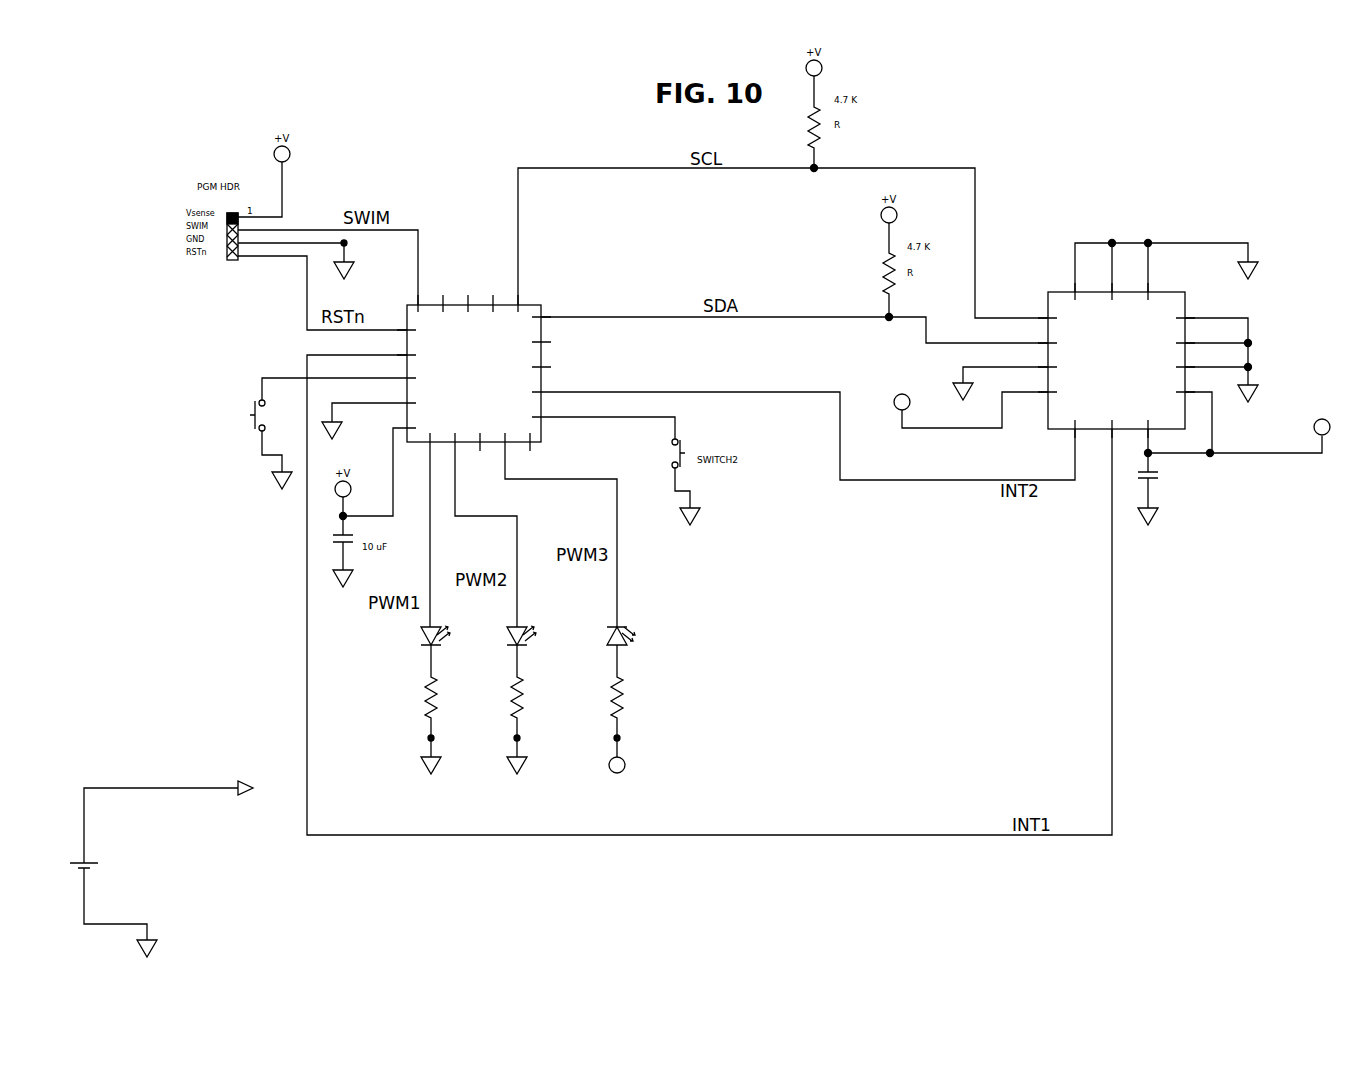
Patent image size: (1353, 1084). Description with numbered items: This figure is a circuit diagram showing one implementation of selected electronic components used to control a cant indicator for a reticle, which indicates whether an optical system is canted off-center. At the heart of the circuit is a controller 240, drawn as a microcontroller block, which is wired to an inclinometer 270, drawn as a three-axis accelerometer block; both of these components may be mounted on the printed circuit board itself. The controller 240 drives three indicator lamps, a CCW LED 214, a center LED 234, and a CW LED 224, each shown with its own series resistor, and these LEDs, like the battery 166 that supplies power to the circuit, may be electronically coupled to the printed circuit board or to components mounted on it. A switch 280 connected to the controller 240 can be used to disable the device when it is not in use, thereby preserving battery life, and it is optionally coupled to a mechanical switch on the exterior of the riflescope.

The controller 240 is at (474, 373).
The inclinometer 270 is at (1112, 383).
The switch 280 is at (288, 433).
The CCW LED 214 is at (408, 697).
The center LED 234 is at (557, 697).
The CW LED 224 is at (650, 705).
The battery 166 is at (171, 869).